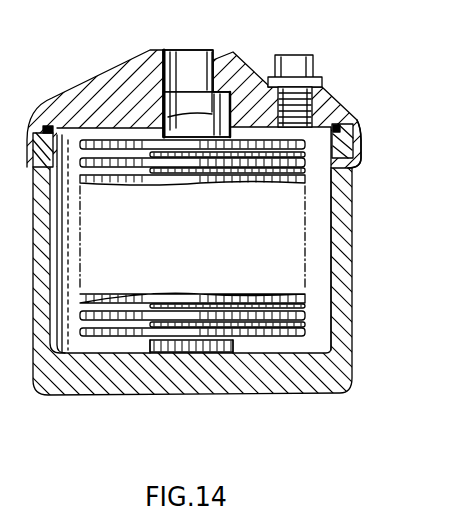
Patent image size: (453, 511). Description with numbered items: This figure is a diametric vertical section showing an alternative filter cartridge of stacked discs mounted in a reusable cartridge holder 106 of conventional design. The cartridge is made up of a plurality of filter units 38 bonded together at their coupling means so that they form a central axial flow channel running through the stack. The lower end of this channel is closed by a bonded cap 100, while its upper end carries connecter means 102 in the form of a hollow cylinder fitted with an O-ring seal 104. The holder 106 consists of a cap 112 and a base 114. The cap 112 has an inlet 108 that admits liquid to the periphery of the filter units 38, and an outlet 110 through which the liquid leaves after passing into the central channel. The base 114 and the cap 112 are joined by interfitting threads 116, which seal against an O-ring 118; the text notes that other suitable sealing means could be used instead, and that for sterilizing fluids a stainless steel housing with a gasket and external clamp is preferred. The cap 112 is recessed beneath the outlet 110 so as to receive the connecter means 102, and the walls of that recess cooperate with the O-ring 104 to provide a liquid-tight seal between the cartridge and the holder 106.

The filter units 38 is at (306, 163).
The bonded cap 100 is at (176, 343).
The connecter means 102 is at (148, 64).
The O-ring seal 104 is at (148, 99).
The cartridge holder 106 is at (383, 236).
The inlet 108 is at (309, 43).
The outlet 110 is at (198, 62).
The cap 112 is at (330, 105).
The base 114 is at (345, 323).
The interfitting threads 116 is at (355, 149).
The O-ring 118 is at (341, 128).